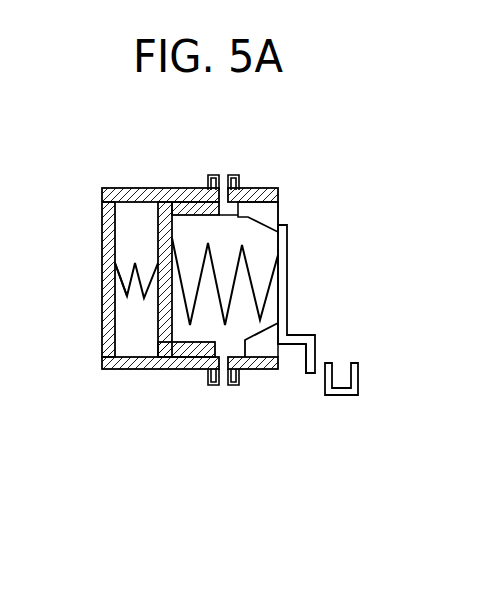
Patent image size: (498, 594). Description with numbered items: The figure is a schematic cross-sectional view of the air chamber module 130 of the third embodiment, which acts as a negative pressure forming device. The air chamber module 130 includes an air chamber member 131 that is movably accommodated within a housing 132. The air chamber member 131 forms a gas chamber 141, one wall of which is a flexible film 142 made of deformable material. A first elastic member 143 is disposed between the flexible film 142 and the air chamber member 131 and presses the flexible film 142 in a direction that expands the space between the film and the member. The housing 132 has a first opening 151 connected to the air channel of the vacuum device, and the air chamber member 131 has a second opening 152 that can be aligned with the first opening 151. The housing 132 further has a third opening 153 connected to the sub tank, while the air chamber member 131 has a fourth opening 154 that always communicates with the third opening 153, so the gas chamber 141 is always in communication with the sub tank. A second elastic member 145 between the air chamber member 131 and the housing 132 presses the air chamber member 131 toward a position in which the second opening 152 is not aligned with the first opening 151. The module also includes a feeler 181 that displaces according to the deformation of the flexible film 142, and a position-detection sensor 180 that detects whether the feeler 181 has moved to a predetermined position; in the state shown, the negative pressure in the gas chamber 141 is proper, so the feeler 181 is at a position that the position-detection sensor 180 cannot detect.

The air chamber module 130 is at (97, 168).
The air chamber member 131 is at (165, 228).
The housing 132 is at (117, 257).
The gas chamber 141 is at (183, 232).
The flexible film 142 is at (287, 238).
The first elastic member 143 is at (192, 302).
The second elastic member 145 is at (125, 289).
The first opening 151 is at (226, 193).
The second opening 152 is at (223, 210).
The third opening 153 is at (223, 382).
The fourth opening 154 is at (216, 352).
The position-detection sensor 180 is at (345, 397).
The feeler 181 is at (308, 375).